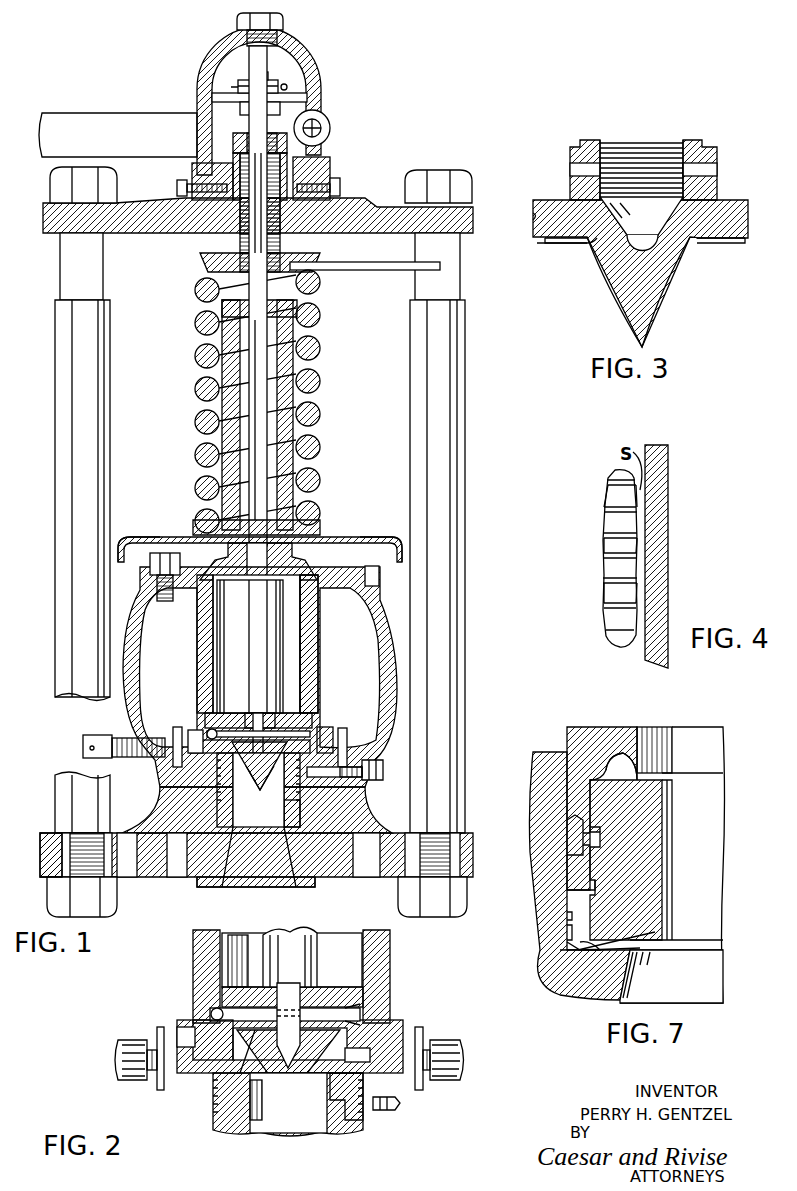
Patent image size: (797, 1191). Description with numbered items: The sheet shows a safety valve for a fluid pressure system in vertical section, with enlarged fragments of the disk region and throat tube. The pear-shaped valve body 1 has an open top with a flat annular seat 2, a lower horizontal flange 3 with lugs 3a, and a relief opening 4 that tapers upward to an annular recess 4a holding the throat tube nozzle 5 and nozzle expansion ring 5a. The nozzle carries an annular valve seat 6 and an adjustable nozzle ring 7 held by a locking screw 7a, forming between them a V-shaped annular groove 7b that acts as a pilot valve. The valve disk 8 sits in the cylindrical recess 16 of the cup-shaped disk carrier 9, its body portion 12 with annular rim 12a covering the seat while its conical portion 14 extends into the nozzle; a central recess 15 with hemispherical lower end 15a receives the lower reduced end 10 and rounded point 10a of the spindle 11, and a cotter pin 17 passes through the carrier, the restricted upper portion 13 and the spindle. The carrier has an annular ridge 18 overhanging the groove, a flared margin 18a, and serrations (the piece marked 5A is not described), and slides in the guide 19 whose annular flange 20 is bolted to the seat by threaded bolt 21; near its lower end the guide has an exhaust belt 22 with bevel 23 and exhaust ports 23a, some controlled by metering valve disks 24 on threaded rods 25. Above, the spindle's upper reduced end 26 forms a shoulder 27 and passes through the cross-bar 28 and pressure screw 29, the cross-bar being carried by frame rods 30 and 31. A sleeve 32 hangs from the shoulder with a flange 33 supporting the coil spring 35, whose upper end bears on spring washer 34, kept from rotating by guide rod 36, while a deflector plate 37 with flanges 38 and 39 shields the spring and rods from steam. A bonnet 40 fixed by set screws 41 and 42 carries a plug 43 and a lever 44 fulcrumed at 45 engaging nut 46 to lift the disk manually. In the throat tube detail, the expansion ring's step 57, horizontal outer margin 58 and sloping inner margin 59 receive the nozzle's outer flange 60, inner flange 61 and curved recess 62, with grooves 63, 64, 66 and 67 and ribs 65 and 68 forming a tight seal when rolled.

In FIG. 1, the valve body 1 is at (378, 686).
In FIG. 1, the annular seat 2 is at (378, 616).
In FIG. 1, the horizontal flange 3 is at (386, 880).
In FIG. 1, the lugs 3a is at (42, 855).
In FIG. 1, the relief opening 4 is at (292, 866).
In FIG. 7, the relief opening 4 is at (671, 976).
In FIG. 1, the annular recess 4a is at (280, 830).
In FIG. 7, the annular recess 4a is at (700, 950).
In FIG. 1, the throat tube nozzle 5 is at (219, 776).
In FIG. 2, the throat tube nozzle 5 is at (252, 1120).
In FIG. 7, the throat tube nozzle 5 is at (625, 718).
In FIG. 1, the nozzle expansion ring 5a is at (290, 808).
In FIG. 7, the bushing body 5A is at (655, 862).
In FIG. 1, the annular valve seat 6 is at (270, 756).
In FIG. 2, the annular valve seat 6 is at (252, 1078).
In FIG. 2, the nozzle ring 7 is at (360, 1110).
In FIG. 1, the locking screw 7a is at (330, 775).
In FIG. 2, the locking screw 7a is at (376, 1110).
In FIG. 2, the V-shaped annular groove 7b is at (240, 1055).
In FIG. 1, the valve disk 8 is at (262, 780).
In FIG. 3, the valve disk 8 is at (533, 232).
In FIG. 1, the disk carrier 9 is at (300, 647).
In FIG. 4, the disk carrier 9 is at (614, 495).
In FIG. 1, the lower reduced end 10 is at (258, 712).
In FIG. 2, the rounded point 10a is at (292, 1090).
In FIG. 1, the spindle 11 is at (261, 296).
In FIG. 3, the body portion 12 is at (748, 220).
In FIG. 2, the annular rim 12a is at (370, 1030).
In FIG. 3, the annular rim 12a is at (548, 255).
In FIG. 3, the restricted upper portion 13 is at (717, 152).
In FIG. 1, the conical portion 14 is at (252, 785).
In FIG. 3, the conical portion 14 is at (652, 310).
In FIG. 3, the central recess 15 is at (648, 217).
In FIG. 3, the hemispherical lower end 15a is at (650, 245).
In FIG. 1, the cylindrical recess 16 is at (295, 722).
In FIG. 1, the cotter pin 17 is at (243, 714).
In FIG. 2, the cotter pin 17 is at (335, 1003).
In FIG. 1, the annular ridge 18 is at (214, 750).
In FIG. 2, the annular ridge 18 is at (218, 1060).
In FIG. 1, the flared margin 18a is at (306, 556).
In FIG. 1, the guide 19 is at (318, 665).
In FIG. 4, the guide 19 is at (668, 578).
In FIG. 1, the annular flange 20 is at (380, 575).
In FIG. 1, the threaded bolt 21 is at (150, 568).
In FIG. 1, the annular recess 22 is at (205, 733).
In FIG. 2, the annular recess 22 is at (395, 1025).
In FIG. 2, the bevel 23 is at (372, 1062).
In FIG. 1, the apertures 23a is at (330, 727).
In FIG. 2, the apertures 23a is at (181, 1035).
In FIG. 1, the valve disk 24 is at (348, 735).
In FIG. 2, the valve disk 24 is at (160, 1027).
In FIG. 1, the threaded rod 25 is at (100, 733).
In FIG. 2, the threaded rod 25 is at (130, 1080).
In FIG. 1, the upper reduced end 26 is at (200, 281).
In FIG. 1, the shoulder 27 is at (194, 345).
In FIG. 1, the cross-bar 28 is at (350, 205).
In FIG. 1, the pressure screw 29 is at (290, 160).
In FIG. 1, the frame rod 30 is at (103, 422).
In FIG. 1, the frame rod 31 is at (410, 386).
In FIG. 1, the sleeve 32 is at (294, 366).
In FIG. 1, the flange 33 is at (320, 528).
In FIG. 1, the spring washer 34 is at (305, 251).
In FIG. 1, the coil spring 35 is at (320, 347).
In FIG. 1, the guide rod 36 is at (398, 271).
In FIG. 1, the deflector plate 37 is at (360, 541).
In FIG. 1, the downwardly extending flange 38 is at (120, 545).
In FIG. 1, the downwardly extending flange 39 is at (401, 530).
In FIG. 1, the bonnet 40 is at (322, 62).
In FIG. 1, the set screw 41 is at (177, 187).
In FIG. 1, the set screw 42 is at (341, 186).
In FIG. 1, the plug 43 is at (284, 17).
In FIG. 1, the lever 44 is at (102, 116).
In FIG. 1, the fulcrum 45 is at (330, 122).
In FIG. 1, the nut 46 is at (235, 101).
In FIG. 7, the annular step 57 is at (620, 935).
In FIG. 7, the horizontal outer margin 58 is at (580, 950).
In FIG. 7, the inner margin 59 is at (580, 975).
In FIG. 7, the outer annular vertical flange 60 is at (567, 778).
In FIG. 7, the inner vertical flange 61 is at (660, 756).
In FIG. 7, the curved annular recess 62 is at (612, 757).
In FIG. 7, the annular groove 63 is at (567, 842).
In FIG. 7, the annular groove 64 is at (585, 888).
In FIG. 7, the annular rib 65 is at (567, 928).
In FIG. 7, the annular groove 66 is at (567, 918).
In FIG. 7, the annular groove 67 is at (583, 838).
In FIG. 7, the annular rib 68 is at (590, 830).